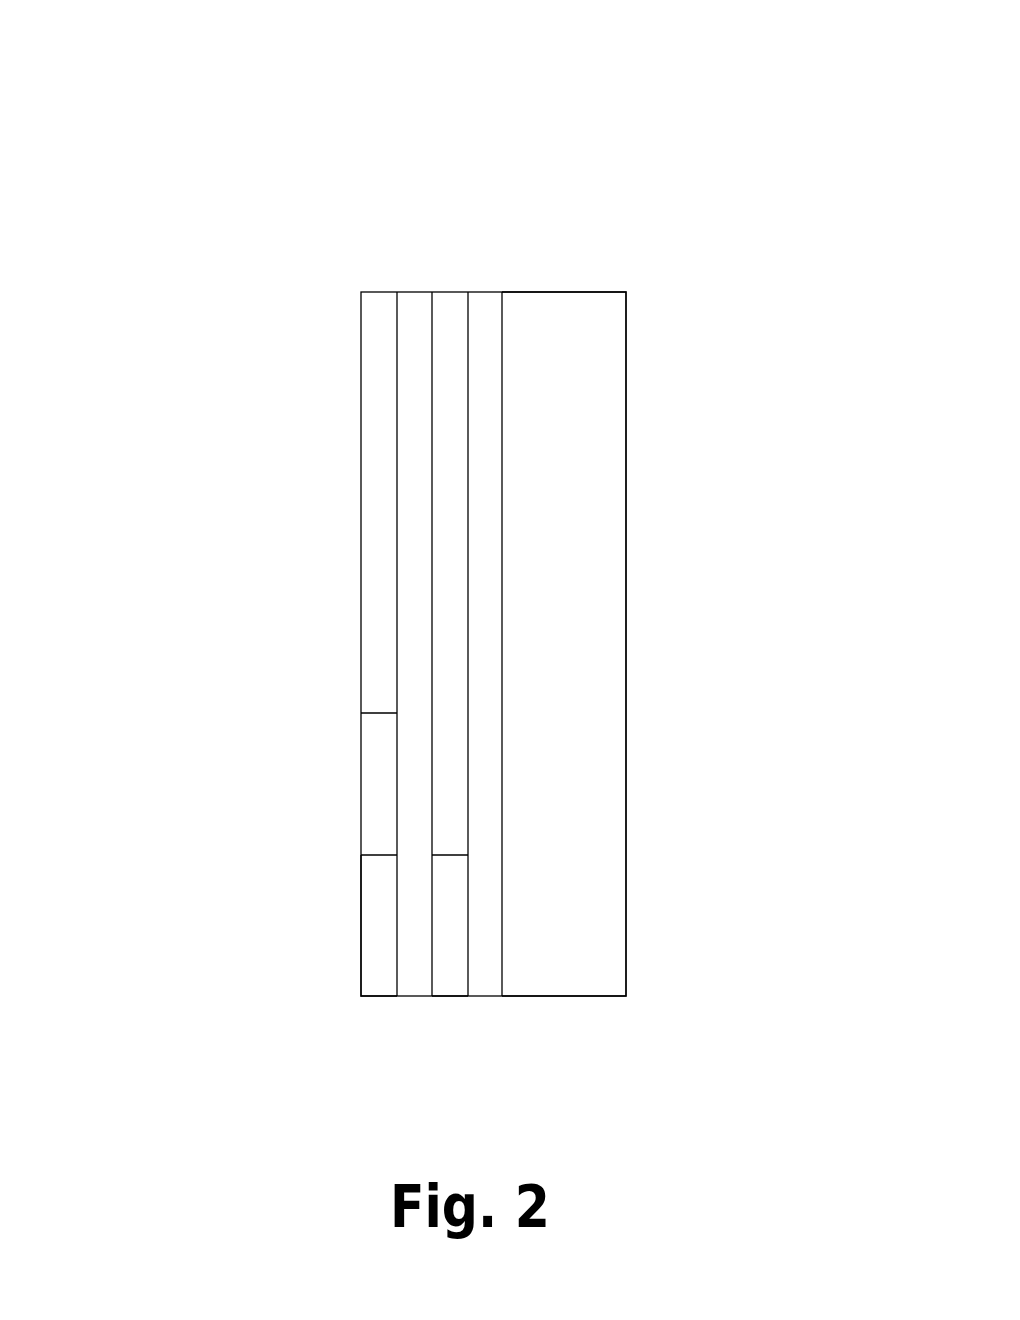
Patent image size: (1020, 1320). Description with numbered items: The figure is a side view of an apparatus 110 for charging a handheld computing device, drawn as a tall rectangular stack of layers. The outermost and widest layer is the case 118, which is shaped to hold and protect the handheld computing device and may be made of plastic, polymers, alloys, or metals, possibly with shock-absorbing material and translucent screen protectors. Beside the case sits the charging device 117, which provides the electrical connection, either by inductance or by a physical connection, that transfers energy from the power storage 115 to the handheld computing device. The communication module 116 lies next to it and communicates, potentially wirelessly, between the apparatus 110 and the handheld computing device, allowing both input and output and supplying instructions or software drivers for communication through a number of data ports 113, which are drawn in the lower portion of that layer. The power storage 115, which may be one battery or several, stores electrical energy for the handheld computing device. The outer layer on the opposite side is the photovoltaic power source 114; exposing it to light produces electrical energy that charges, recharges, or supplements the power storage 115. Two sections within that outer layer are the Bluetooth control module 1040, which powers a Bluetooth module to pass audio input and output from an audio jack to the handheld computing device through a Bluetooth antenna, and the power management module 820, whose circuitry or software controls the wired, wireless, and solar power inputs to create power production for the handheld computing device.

The apparatus for charging a handheld computing device 110 is at (289, 97).
The data ports 113 is at (448, 960).
The photovoltaic power source 114 is at (378, 345).
The power storage 115 is at (413, 325).
The communication module 116 is at (448, 335).
The charging device 117 is at (483, 380).
The case 118 is at (573, 362).
The power management module 820 is at (379, 943).
The Bluetooth control module 1040 is at (379, 784).